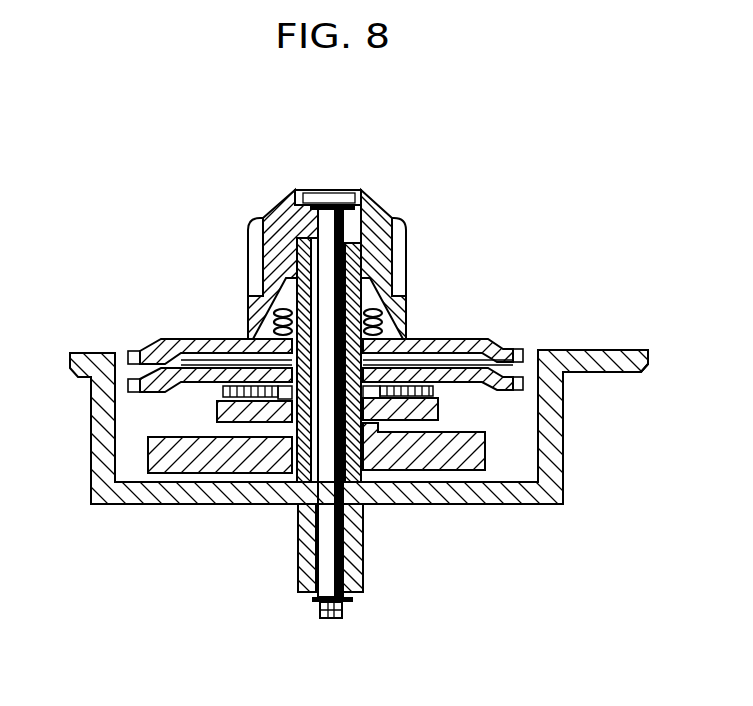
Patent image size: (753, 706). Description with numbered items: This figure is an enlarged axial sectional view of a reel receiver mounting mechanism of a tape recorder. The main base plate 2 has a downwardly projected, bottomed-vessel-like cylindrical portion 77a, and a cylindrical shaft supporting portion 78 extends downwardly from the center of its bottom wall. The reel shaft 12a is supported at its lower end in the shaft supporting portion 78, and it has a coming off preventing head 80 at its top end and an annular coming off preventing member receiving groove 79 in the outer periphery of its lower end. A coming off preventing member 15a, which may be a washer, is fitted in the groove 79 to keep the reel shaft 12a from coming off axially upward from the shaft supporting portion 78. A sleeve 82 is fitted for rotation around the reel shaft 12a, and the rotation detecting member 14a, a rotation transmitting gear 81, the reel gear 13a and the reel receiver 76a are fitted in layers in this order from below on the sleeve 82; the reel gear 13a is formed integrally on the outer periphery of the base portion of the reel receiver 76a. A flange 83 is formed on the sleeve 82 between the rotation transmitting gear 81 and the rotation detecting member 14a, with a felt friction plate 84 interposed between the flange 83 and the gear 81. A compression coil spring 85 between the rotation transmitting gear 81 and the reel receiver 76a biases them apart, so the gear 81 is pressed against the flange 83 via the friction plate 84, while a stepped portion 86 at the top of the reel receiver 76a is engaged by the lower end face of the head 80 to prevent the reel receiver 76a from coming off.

The coming off preventing head 80 is at (323, 190).
The stepped portion 86 is at (362, 193).
The reel receiver 76a is at (366, 200).
The reel shaft 12a is at (406, 242).
The sleeve 82 is at (406, 277).
The compression coil spring 85 is at (406, 310).
The reel gear 13a is at (503, 350).
The cylindrical portion 77a is at (531, 395).
The main base plate 2 is at (620, 350).
The rotation detecting member 14a is at (563, 476).
The rotation transmitting gear 81 is at (537, 461).
The flange 83 is at (440, 402).
The friction plate 84 is at (220, 398).
The shaft supporting portion 78 is at (367, 558).
The coming off preventing member 15a is at (353, 601).
The coming off preventing member receiving groove 79 is at (333, 620).